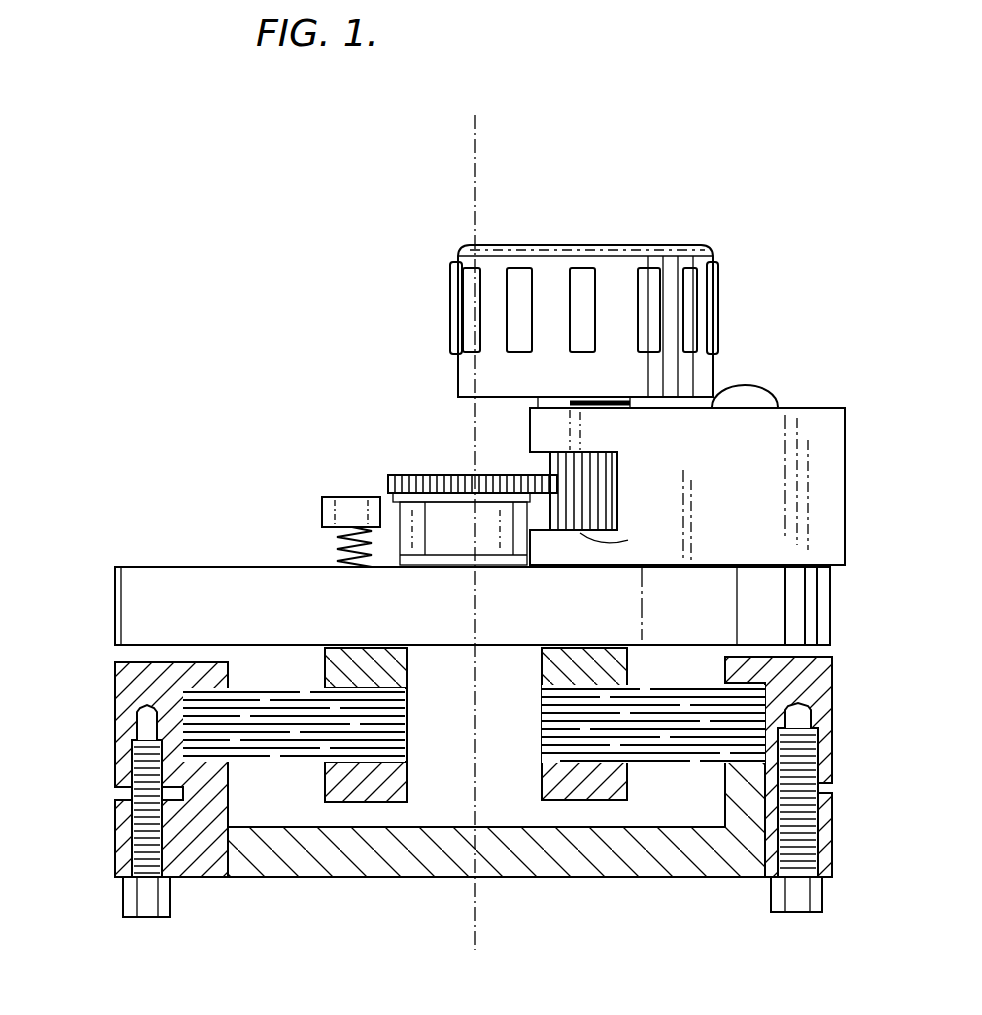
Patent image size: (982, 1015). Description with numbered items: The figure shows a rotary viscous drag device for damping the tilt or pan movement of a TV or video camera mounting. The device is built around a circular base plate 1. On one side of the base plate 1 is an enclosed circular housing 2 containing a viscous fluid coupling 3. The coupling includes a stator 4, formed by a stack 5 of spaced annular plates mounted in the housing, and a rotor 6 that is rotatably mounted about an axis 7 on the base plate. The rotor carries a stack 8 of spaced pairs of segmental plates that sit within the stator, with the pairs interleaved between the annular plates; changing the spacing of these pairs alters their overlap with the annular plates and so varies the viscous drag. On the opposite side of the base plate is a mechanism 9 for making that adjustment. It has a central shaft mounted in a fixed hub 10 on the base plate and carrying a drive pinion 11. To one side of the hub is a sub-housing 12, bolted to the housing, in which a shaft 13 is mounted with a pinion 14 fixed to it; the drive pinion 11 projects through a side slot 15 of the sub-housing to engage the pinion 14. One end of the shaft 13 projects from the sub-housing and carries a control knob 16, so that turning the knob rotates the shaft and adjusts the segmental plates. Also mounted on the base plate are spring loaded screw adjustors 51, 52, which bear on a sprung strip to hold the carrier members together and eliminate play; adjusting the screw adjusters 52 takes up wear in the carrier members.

The base plate 1 is at (115, 598).
The housing 2 is at (122, 773).
The viscous fluid coupling 3 is at (252, 786).
The stator 4 is at (138, 681).
The stack of spaced annular plates 5 is at (195, 727).
The rotor 6 is at (393, 780).
The axis 7 is at (478, 611).
The stack of spaced pairs of segmental plates 8 is at (385, 715).
The mechanism 9 is at (412, 440).
The fixed hub 10 is at (440, 527).
The drive pinion 11 is at (407, 474).
The sub-housing 12 is at (827, 417).
The shaft 13 is at (587, 405).
The pinion 14 is at (552, 468).
The side slot 15 is at (625, 526).
The control knob 16 is at (458, 262).
The spring loaded screw adjustor 51 is at (338, 555).
The screw adjuster 52 is at (322, 501).